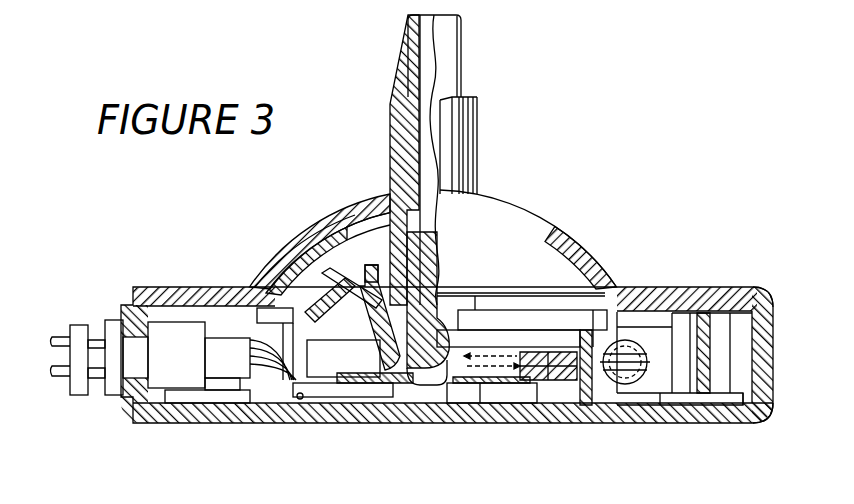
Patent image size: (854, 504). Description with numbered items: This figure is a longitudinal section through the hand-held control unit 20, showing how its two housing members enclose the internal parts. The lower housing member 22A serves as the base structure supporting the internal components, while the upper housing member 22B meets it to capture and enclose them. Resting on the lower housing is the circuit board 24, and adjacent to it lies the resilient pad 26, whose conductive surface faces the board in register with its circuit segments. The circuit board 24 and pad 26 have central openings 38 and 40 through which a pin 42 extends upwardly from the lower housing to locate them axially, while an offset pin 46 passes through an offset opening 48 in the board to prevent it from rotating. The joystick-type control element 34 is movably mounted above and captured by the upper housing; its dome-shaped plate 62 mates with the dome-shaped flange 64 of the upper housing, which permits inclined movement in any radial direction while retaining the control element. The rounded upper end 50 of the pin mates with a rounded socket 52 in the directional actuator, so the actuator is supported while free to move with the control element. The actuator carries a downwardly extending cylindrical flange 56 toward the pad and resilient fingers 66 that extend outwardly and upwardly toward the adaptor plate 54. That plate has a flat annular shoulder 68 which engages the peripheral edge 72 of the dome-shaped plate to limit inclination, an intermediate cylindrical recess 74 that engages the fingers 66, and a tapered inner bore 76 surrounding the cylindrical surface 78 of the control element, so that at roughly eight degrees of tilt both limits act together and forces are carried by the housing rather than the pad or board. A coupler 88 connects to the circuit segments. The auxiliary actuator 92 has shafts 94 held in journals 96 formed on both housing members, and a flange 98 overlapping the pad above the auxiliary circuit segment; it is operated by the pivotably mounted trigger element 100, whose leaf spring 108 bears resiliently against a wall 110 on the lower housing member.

The hand-held control unit 20 is at (655, 256).
The lower housing member 22A is at (763, 425).
The upper housing member 22B is at (772, 297).
The circuit board 24 is at (340, 392).
The resilient pad 26 is at (541, 386).
The control element 34 is at (470, 160).
The central opening of circuit board 38 is at (443, 380).
The central opening of conductive pad 40 is at (425, 395).
The pin 42 is at (483, 385).
The offset pin 46 is at (471, 411).
The offset opening 48 is at (486, 401).
The upper end of pin 50 is at (445, 335).
The socket 52 is at (389, 364).
The adaptor plate 54 is at (290, 264).
The cylindrical flange 56 is at (357, 368).
The dome-shaped plate 62 is at (351, 212).
The dome-shaped flange 64 is at (589, 253).
The resilient fingers 66 is at (343, 357).
The annular shoulder 68 is at (250, 335).
The peripheral edge 72 is at (262, 292).
The intermediate cylindrical recess 74 is at (343, 300).
The inner bore 76 is at (380, 268).
The cylindrical surface 78 is at (340, 233).
The coupler 88 is at (169, 362).
The auxiliary actuator 92 is at (570, 347).
The shafts 94 is at (632, 348).
The journals 96 is at (660, 355).
The flange 98 is at (590, 395).
The trigger element 100 is at (640, 320).
The leaf springs 108 is at (692, 312).
The wall 110 is at (762, 300).